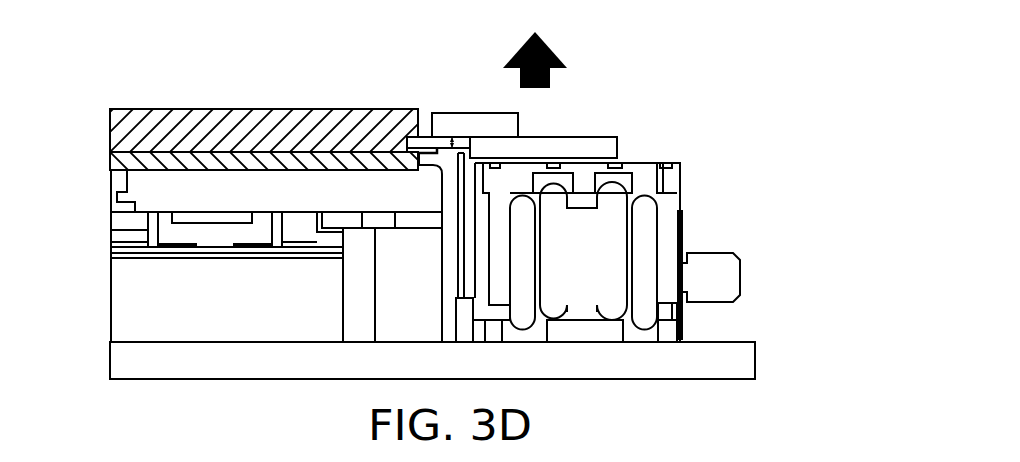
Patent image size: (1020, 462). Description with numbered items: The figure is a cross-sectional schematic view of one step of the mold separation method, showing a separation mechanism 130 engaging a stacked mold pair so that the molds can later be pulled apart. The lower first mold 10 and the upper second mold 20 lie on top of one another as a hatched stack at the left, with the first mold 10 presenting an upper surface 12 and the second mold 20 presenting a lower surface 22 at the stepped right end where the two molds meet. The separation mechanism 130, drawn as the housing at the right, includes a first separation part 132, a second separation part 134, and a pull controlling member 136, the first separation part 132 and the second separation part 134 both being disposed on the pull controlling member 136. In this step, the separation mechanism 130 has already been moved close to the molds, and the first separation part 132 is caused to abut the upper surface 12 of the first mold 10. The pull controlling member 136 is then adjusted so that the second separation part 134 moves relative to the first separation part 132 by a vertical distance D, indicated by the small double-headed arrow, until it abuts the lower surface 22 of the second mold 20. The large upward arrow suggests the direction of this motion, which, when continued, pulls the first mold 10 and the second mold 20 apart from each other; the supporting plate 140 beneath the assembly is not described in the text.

The first mold 10 is at (157, 163).
The upper surface 12 is at (340, 148).
The second mold 20 is at (243, 120).
The lower surface 22 is at (416, 134).
The vertical distance D is at (457, 138).
The separation mechanism 130 is at (598, 70).
The first separation part 132 is at (462, 170).
The second separation part 134 is at (482, 123).
The pull controlling member 136 is at (707, 270).
The base plate 140 is at (742, 354).